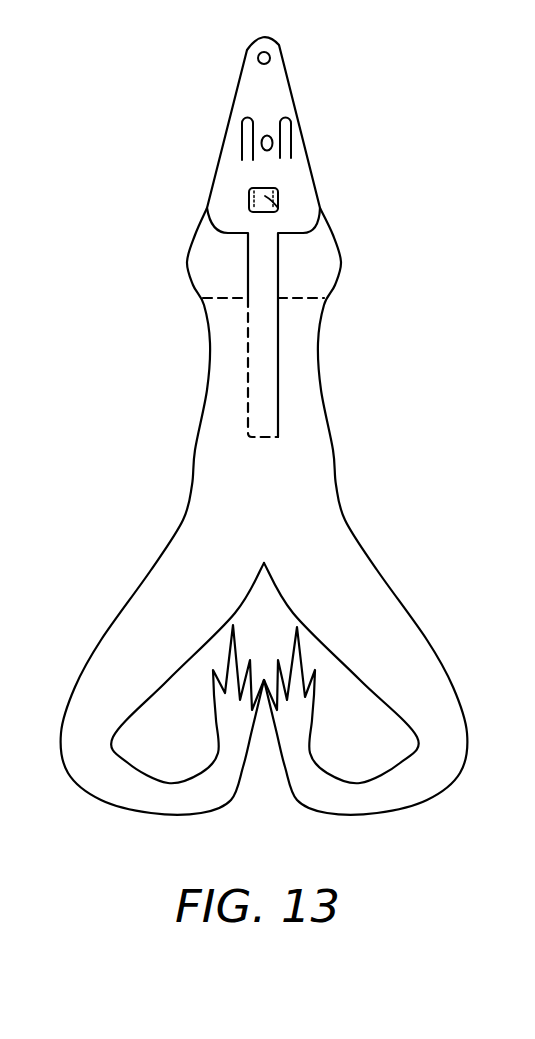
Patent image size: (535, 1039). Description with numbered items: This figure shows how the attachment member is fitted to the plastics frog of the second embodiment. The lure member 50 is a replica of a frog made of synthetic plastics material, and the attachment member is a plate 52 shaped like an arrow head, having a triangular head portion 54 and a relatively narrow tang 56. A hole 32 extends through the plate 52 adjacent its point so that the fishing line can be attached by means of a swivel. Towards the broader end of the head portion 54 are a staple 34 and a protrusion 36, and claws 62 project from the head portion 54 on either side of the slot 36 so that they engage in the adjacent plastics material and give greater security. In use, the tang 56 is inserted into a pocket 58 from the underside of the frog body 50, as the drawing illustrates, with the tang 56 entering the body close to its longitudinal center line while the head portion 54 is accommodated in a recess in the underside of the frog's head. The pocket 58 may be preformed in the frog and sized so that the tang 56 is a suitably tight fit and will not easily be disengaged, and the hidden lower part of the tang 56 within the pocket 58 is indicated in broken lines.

The lure member 50 is at (112, 375).
The plate 52 is at (261, 122).
The head portion 54 is at (290, 78).
The hole 32 is at (268, 52).
The claws 62 is at (245, 119).
The protrusion 36 is at (272, 143).
The staple 34 is at (278, 208).
The tang 56 is at (279, 271).
The pocket 58 is at (275, 406).